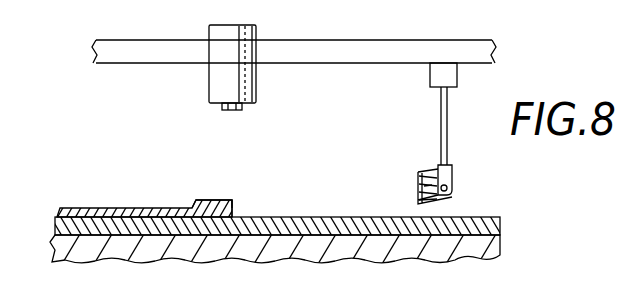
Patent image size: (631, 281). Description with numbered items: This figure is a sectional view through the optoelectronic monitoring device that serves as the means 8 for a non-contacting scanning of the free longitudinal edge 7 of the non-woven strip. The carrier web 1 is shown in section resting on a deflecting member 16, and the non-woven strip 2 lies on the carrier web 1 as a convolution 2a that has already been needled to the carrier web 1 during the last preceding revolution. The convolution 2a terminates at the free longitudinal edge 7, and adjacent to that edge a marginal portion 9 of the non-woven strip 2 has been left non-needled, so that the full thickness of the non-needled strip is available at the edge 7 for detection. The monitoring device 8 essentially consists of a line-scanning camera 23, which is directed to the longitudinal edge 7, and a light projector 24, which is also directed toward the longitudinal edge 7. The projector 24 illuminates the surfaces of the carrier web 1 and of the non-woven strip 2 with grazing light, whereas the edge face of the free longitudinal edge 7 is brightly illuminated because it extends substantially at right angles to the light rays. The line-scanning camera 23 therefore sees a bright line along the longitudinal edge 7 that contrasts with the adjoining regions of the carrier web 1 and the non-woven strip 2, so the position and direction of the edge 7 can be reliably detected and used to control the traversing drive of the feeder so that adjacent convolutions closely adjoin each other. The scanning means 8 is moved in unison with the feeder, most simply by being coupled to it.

The carrier web 1 is at (307, 228).
The non-woven strip 2 is at (311, 200).
The convolution of the non-woven strip 2a is at (135, 213).
The free longitudinal edge 7 is at (232, 210).
The means for non-contacting scanning of the longitudinal edge 8 is at (258, 87).
The marginal portion 9 is at (208, 202).
The deflecting member 16 is at (475, 249).
The line-scanning camera 23 is at (223, 79).
The light projector 24 is at (418, 183).